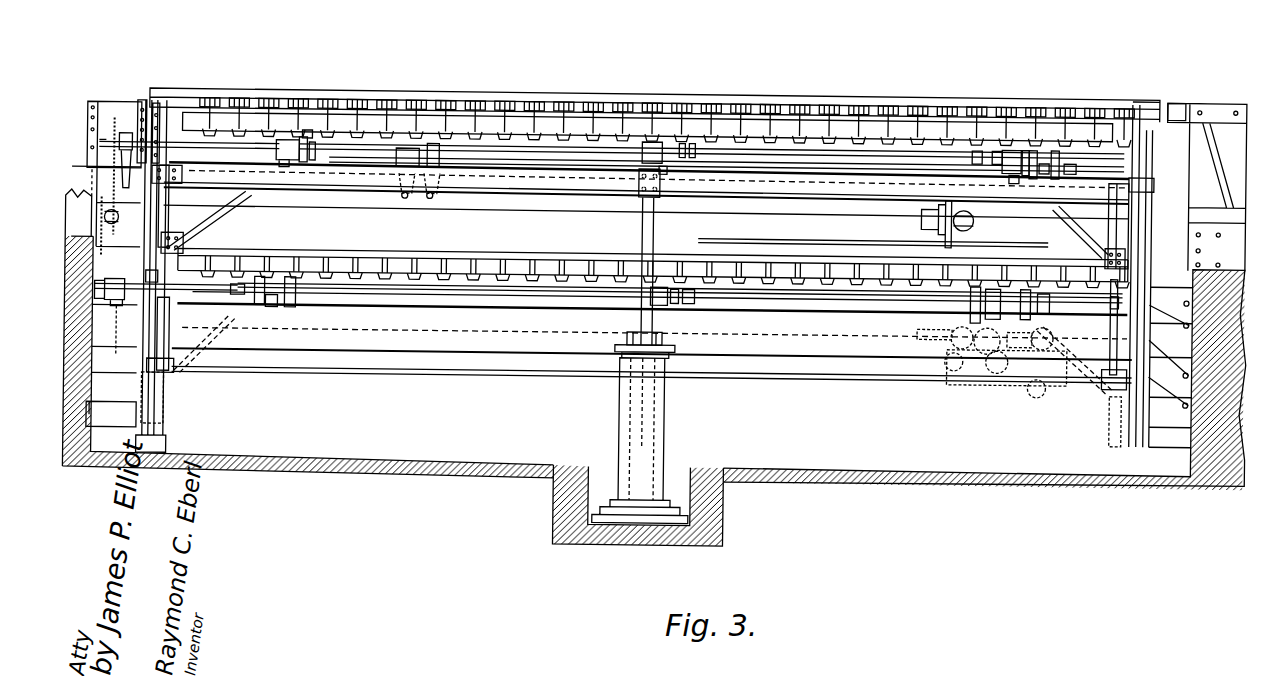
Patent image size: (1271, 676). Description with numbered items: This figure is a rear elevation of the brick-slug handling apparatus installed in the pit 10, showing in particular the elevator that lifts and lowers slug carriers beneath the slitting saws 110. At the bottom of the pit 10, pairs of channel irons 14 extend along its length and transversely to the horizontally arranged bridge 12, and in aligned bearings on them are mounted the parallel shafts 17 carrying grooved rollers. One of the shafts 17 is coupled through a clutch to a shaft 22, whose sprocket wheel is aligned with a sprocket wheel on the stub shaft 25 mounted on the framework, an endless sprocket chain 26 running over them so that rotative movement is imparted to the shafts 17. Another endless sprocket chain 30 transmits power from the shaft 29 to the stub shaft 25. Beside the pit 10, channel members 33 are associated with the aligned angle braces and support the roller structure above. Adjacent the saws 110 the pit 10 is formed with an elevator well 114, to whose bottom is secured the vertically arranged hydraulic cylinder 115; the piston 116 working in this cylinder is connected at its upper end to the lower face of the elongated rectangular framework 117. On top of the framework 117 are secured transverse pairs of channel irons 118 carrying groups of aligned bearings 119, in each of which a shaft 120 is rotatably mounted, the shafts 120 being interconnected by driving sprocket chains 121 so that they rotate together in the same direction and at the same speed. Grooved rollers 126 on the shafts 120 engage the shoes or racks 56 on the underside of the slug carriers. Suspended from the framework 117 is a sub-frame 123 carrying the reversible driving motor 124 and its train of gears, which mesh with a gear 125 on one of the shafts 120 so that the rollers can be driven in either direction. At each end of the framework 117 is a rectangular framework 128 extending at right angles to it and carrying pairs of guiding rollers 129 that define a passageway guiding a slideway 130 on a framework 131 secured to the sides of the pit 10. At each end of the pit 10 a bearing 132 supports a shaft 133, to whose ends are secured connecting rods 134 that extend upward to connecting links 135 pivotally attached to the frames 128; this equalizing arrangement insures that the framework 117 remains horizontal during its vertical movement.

The pit 10 is at (118, 455).
The bridge 12 is at (1206, 187).
The channel irons 14 is at (274, 308).
The shaft 17 is at (816, 301).
The shaft 22 is at (166, 283).
The stub shaft 25 is at (118, 222).
The endless sprocket chain 26 is at (104, 238).
The shaft 29 is at (189, 150).
The endless sprocket chain 30 is at (115, 120).
The channel members 33 is at (243, 204).
The racks 56 is at (315, 132).
The slitting saws 110 is at (198, 127).
The elevator well 114 is at (690, 490).
The hydraulic cylinder 115 is at (660, 420).
The piston 116 is at (656, 233).
The rectangular framework 117 is at (578, 184).
The channel irons 118 is at (277, 161).
The bearings 119 is at (290, 135).
The shaft 120 is at (344, 150).
The driving sprocket chains 121 is at (677, 133).
The sub-frame 123 is at (1010, 235).
The driving motor 124 is at (975, 216).
The gear 125 is at (1043, 164).
The grooved rollers 126 is at (314, 139).
The rectangular framework 128 is at (205, 216).
The guiding rollers 129 is at (162, 169).
The slideway 130 is at (150, 249).
The framework 131 is at (108, 412).
The bearing 132 is at (1112, 362).
The shaft 133 is at (217, 369).
The connecting rod 134 is at (172, 320).
The connecting link 135 is at (168, 294).